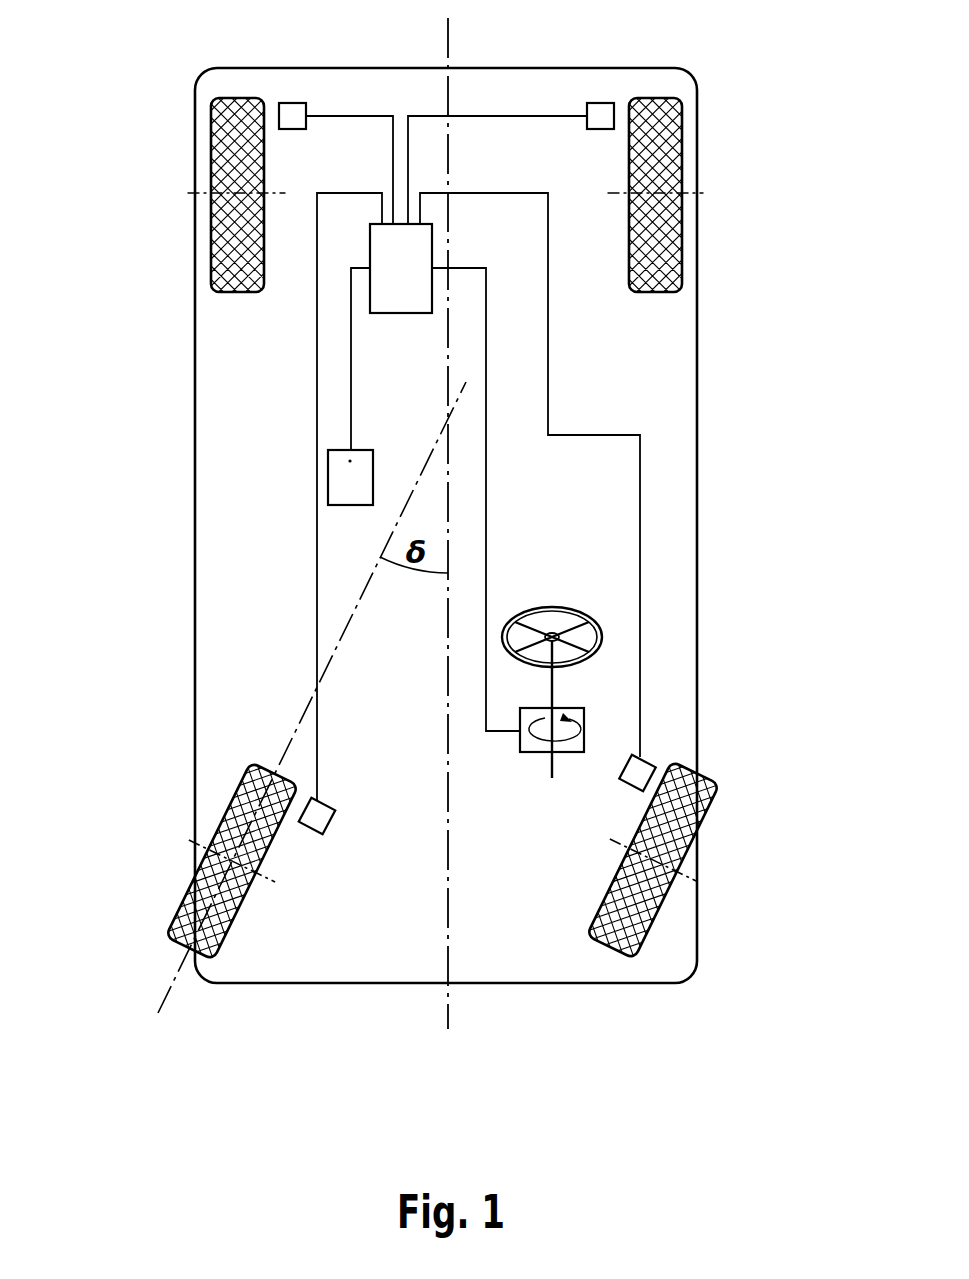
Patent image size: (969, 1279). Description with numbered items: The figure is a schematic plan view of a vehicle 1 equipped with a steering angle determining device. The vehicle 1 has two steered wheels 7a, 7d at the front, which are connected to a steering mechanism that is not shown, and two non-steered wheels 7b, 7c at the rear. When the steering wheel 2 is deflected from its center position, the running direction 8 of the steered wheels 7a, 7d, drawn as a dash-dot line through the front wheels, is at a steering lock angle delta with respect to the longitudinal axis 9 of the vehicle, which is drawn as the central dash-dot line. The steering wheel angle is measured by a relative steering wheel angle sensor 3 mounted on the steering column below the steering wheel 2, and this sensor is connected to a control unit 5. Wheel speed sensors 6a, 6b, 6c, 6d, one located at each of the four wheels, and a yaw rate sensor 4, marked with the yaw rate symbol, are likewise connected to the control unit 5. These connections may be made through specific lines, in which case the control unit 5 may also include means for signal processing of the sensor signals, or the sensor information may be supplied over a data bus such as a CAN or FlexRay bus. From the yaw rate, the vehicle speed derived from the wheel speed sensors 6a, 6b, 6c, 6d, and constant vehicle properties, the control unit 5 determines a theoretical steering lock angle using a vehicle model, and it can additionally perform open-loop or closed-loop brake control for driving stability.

The vehicle 1 is at (730, 483).
The steering wheel 2 is at (550, 607).
The relative steering wheel angle sensor 3 is at (537, 752).
The yaw rate sensor 4 is at (328, 476).
The control unit 5 is at (400, 313).
The wheel speed sensor 6a is at (309, 833).
The wheel speed sensor 6b is at (290, 103).
The wheel speed sensor 6c is at (601, 103).
The wheel speed sensor 6d is at (626, 787).
The steered wheel 7a is at (232, 947).
The non-steered wheel 7b is at (211, 128).
The non-steered wheel 7c is at (683, 125).
The steered wheel 7d is at (648, 944).
The running direction 8 is at (168, 988).
The longitudinal axis 9 is at (447, 1013).